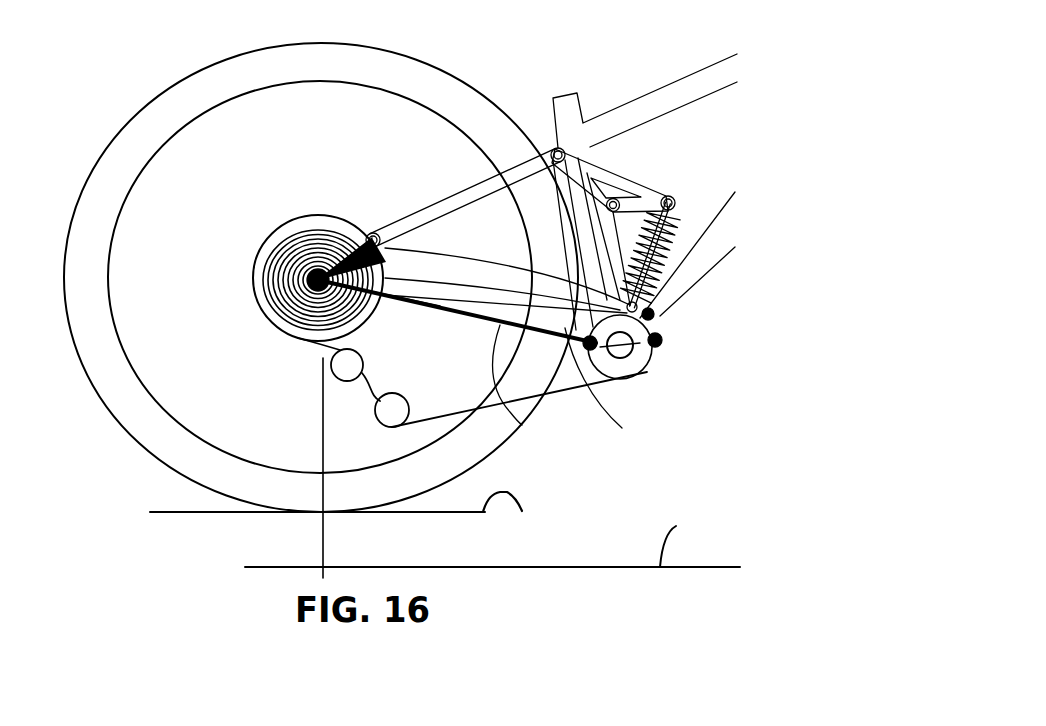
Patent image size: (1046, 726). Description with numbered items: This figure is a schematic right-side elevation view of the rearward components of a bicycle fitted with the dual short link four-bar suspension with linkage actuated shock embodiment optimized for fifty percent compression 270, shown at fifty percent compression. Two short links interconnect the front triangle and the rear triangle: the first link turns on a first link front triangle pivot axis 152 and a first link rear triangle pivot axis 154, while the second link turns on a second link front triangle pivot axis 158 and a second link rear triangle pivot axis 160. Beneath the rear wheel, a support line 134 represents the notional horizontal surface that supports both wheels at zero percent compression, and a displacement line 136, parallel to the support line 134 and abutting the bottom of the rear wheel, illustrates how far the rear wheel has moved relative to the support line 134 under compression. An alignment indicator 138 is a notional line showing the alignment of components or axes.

The dual short link 4-bar suspension with linkage actuated shock embodiment optimize 270 is at (512, 93).
The second link rear triangle pivot axis 160 is at (664, 309).
The first link rear triangle pivot axis 154 is at (664, 332).
The first link front triangle pivot axis 152 is at (652, 372).
The second link front triangle pivot axis 158 is at (612, 425).
The alignment indicator 138 is at (522, 425).
The displacement line 136 is at (522, 511).
The support line 134 is at (676, 526).